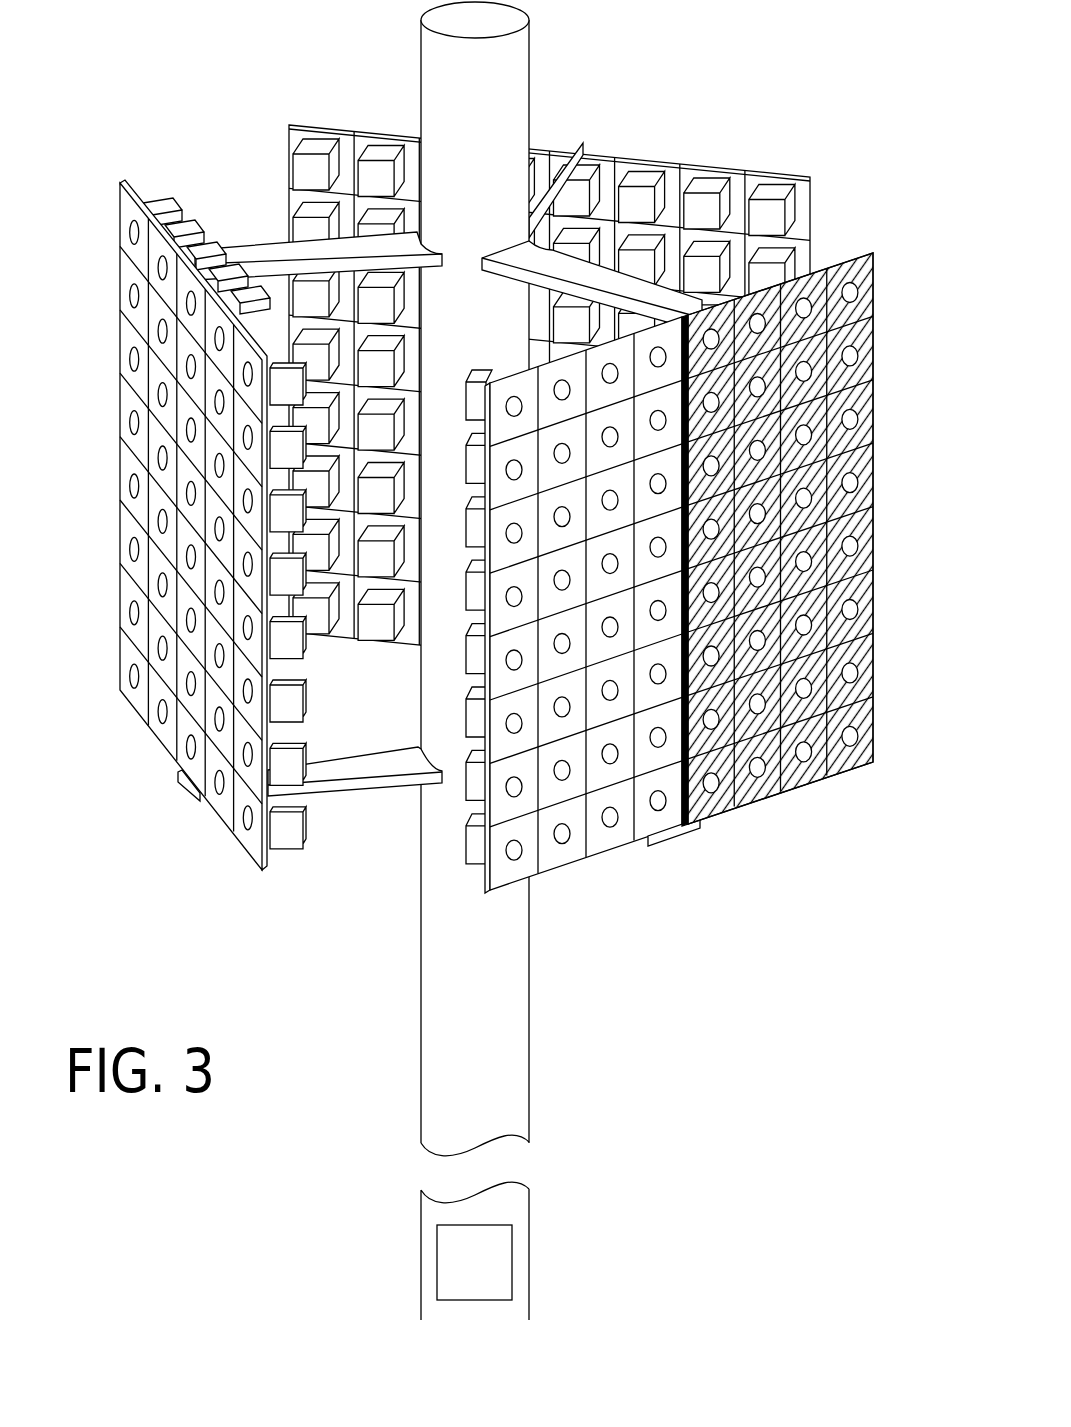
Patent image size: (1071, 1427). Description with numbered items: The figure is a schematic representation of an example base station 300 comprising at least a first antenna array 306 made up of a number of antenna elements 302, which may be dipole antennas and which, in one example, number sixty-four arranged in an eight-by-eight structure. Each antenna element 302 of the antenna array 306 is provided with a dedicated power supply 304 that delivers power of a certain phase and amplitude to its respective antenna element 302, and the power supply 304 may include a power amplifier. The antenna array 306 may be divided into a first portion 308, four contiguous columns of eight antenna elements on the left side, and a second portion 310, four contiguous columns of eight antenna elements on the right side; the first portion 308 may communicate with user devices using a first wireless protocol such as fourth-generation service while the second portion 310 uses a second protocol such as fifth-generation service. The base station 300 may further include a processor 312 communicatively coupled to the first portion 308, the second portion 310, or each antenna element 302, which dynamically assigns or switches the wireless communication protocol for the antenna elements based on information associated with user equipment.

The base station 300 is at (514, 661).
The antenna element 302 is at (487, 431).
The power supply 304 is at (476, 402).
The antenna array 306 is at (822, 996).
The first portion 308 is at (560, 626).
The second portion 310 is at (796, 834).
The processor 312 is at (377, 1256).